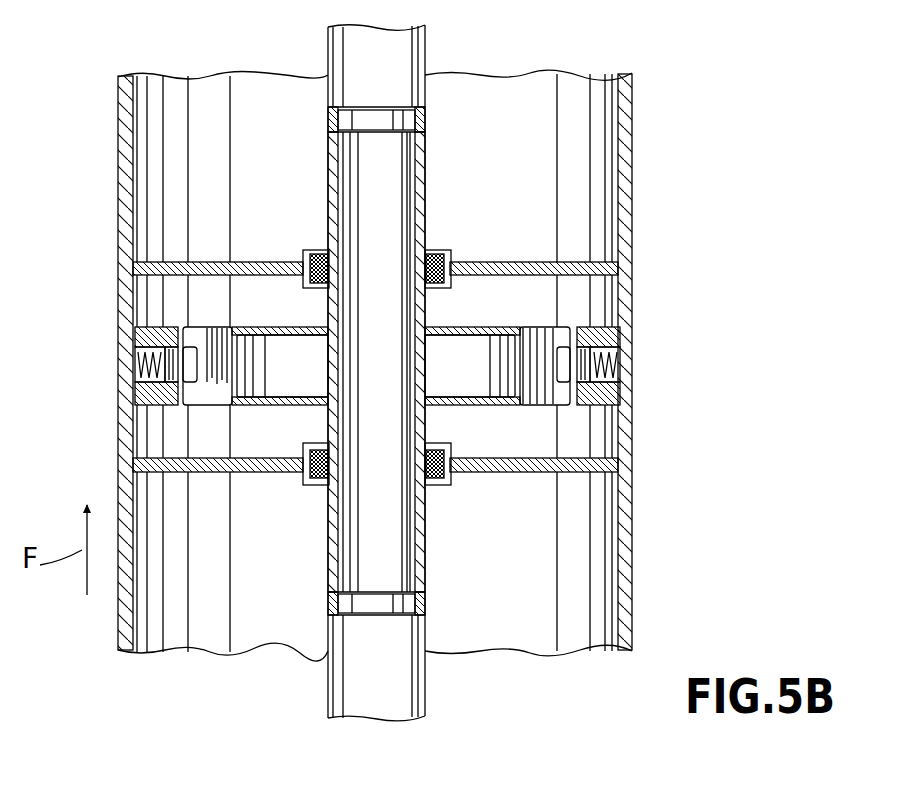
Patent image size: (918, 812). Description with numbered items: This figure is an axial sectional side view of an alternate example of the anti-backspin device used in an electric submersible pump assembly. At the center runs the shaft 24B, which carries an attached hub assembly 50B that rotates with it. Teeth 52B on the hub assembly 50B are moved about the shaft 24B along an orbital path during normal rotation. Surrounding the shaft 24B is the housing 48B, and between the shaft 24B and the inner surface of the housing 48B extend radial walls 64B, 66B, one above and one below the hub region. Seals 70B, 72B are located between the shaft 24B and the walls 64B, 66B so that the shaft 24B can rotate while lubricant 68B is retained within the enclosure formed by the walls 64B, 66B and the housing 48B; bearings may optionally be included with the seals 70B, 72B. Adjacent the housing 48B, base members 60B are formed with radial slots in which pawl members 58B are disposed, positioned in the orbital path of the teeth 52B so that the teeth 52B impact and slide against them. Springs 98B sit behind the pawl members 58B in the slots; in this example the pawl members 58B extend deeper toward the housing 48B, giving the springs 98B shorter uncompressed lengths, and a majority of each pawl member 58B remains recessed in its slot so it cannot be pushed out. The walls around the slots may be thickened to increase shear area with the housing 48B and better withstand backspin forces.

The shaft 24B is at (427, 48).
The housing 48B is at (632, 137).
The hub assembly 50B is at (498, 407).
The teeth 52B is at (207, 347).
The pawl members 58B is at (140, 397).
The base members 60B is at (605, 340).
The radial wall 64B is at (165, 250).
The radial wall 66B is at (276, 475).
The lubricant 68B is at (577, 290).
The seal 70B is at (443, 238).
The seal 72B is at (450, 490).
The springs 98B is at (137, 368).